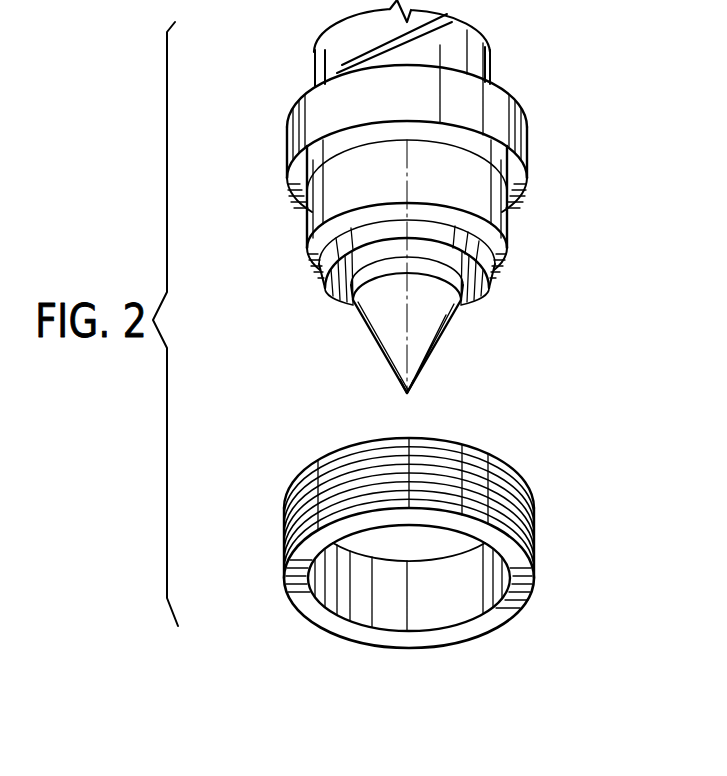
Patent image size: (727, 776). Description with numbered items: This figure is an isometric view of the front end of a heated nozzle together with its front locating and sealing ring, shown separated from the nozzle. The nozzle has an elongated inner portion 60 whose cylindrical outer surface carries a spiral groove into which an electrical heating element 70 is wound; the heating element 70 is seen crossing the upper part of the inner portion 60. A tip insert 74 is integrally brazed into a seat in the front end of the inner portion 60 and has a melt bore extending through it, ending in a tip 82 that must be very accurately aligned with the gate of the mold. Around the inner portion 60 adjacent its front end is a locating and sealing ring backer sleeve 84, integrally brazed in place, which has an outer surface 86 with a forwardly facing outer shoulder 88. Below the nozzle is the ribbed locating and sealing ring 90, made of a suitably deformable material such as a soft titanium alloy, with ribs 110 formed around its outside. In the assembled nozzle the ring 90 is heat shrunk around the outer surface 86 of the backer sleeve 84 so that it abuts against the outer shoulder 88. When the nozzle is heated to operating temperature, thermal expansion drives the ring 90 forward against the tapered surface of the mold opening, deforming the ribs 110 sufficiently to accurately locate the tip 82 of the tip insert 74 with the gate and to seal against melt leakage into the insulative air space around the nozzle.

The elongated inner portion 60 is at (488, 50).
The electrical heating element 70 is at (449, 17).
The tip insert 74 is at (392, 330).
The tip 82 is at (405, 396).
The locating and sealing ring backer sleeve 84 is at (493, 125).
The outer surface 86 is at (490, 222).
The forwardly facing outer shoulder 88 is at (498, 164).
The ribbed locating and sealing ring 90 is at (510, 553).
The ribs 110 is at (522, 498).